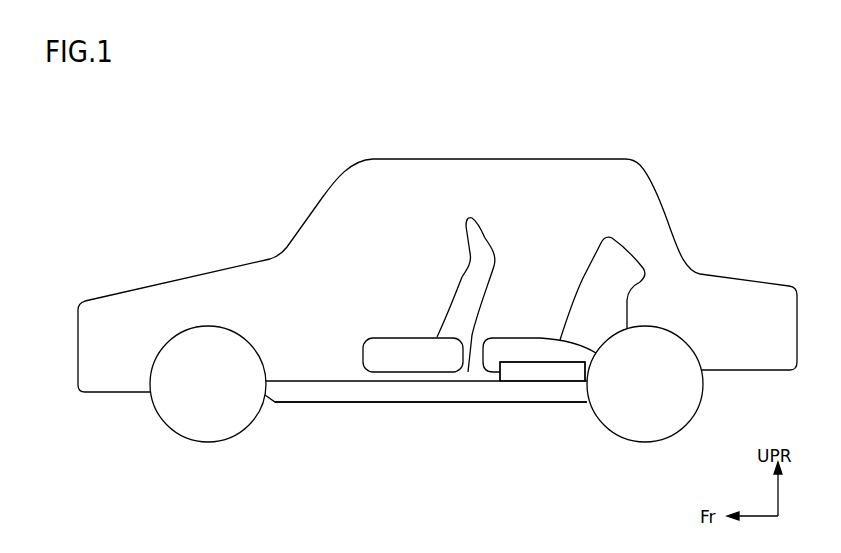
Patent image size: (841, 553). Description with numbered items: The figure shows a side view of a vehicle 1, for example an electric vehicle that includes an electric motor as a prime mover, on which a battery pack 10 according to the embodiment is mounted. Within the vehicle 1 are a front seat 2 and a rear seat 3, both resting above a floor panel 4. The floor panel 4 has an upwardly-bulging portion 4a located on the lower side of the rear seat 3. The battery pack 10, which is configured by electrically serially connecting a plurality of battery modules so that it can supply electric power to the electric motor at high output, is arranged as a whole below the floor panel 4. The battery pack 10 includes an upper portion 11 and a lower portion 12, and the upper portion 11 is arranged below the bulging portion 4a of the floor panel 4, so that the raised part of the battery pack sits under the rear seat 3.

The vehicle 1 is at (704, 172).
The battery pack 10 is at (405, 418).
The front seat 2 is at (481, 217).
The rear seat 3 is at (609, 236).
The floor panel 4 is at (450, 382).
The bulging portion 4a is at (513, 370).
The upper portion 11 is at (562, 368).
The lower portion 12 is at (488, 393).